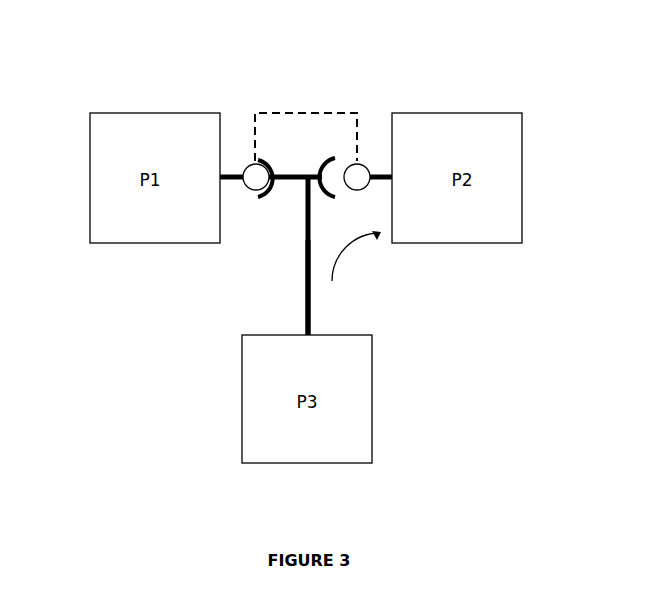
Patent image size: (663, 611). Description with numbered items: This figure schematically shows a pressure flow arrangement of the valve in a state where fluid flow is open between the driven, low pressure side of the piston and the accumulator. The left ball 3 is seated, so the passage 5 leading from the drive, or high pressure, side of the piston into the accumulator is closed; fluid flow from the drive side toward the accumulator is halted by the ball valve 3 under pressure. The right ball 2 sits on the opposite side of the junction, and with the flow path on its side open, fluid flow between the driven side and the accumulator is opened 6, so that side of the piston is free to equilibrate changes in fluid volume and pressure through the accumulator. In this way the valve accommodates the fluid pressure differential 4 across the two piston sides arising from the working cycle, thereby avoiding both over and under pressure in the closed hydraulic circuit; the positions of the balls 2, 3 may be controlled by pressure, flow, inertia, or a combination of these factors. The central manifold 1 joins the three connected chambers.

The fluid manifold line 1 is at (306, 189).
The right ball 2 is at (384, 120).
The left ball 3 is at (216, 120).
The fluid pressure differential 4 is at (330, 113).
The passage 5 is at (310, 297).
The opened fluid flow 6 is at (356, 256).